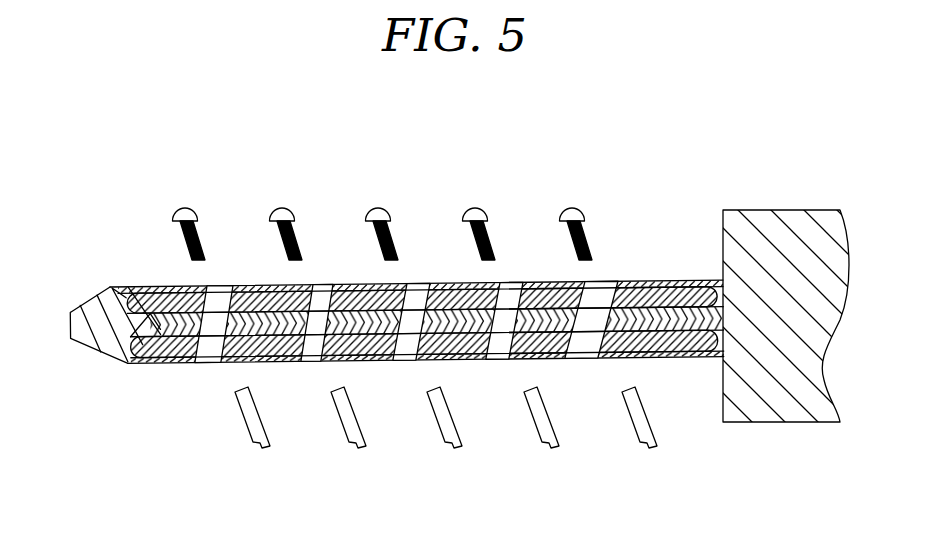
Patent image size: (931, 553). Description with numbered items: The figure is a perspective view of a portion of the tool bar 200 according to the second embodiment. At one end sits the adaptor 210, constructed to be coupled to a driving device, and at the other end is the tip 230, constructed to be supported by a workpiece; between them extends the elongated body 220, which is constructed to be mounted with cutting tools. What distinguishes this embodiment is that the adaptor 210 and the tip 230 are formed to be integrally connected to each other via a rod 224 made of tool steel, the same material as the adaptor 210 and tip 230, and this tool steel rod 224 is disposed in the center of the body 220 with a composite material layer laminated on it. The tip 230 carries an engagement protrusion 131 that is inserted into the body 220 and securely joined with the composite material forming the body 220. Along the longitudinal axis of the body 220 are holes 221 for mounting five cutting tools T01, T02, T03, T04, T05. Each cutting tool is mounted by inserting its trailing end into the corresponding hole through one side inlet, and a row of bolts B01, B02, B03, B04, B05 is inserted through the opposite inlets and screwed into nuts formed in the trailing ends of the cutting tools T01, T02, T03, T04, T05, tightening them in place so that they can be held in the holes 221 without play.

The tool bar 200 is at (398, 99).
The adaptor 210 is at (787, 210).
The body 220 is at (672, 280).
The holes 221 is at (422, 322).
The rod 224 is at (436, 322).
The tip 230 is at (115, 325).
The engagement protrusion 131 is at (145, 324).
The bolt B01 is at (184, 213).
The bolt B02 is at (282, 213).
The bolt B03 is at (379, 213).
The bolt B04 is at (475, 213).
The bolt B05 is at (572, 213).
The cutting tool T01 is at (261, 439).
The cutting tool T02 is at (355, 439).
The cutting tool T03 is at (450, 437).
The cutting tool T04 is at (548, 437).
The cutting tool T05 is at (648, 438).